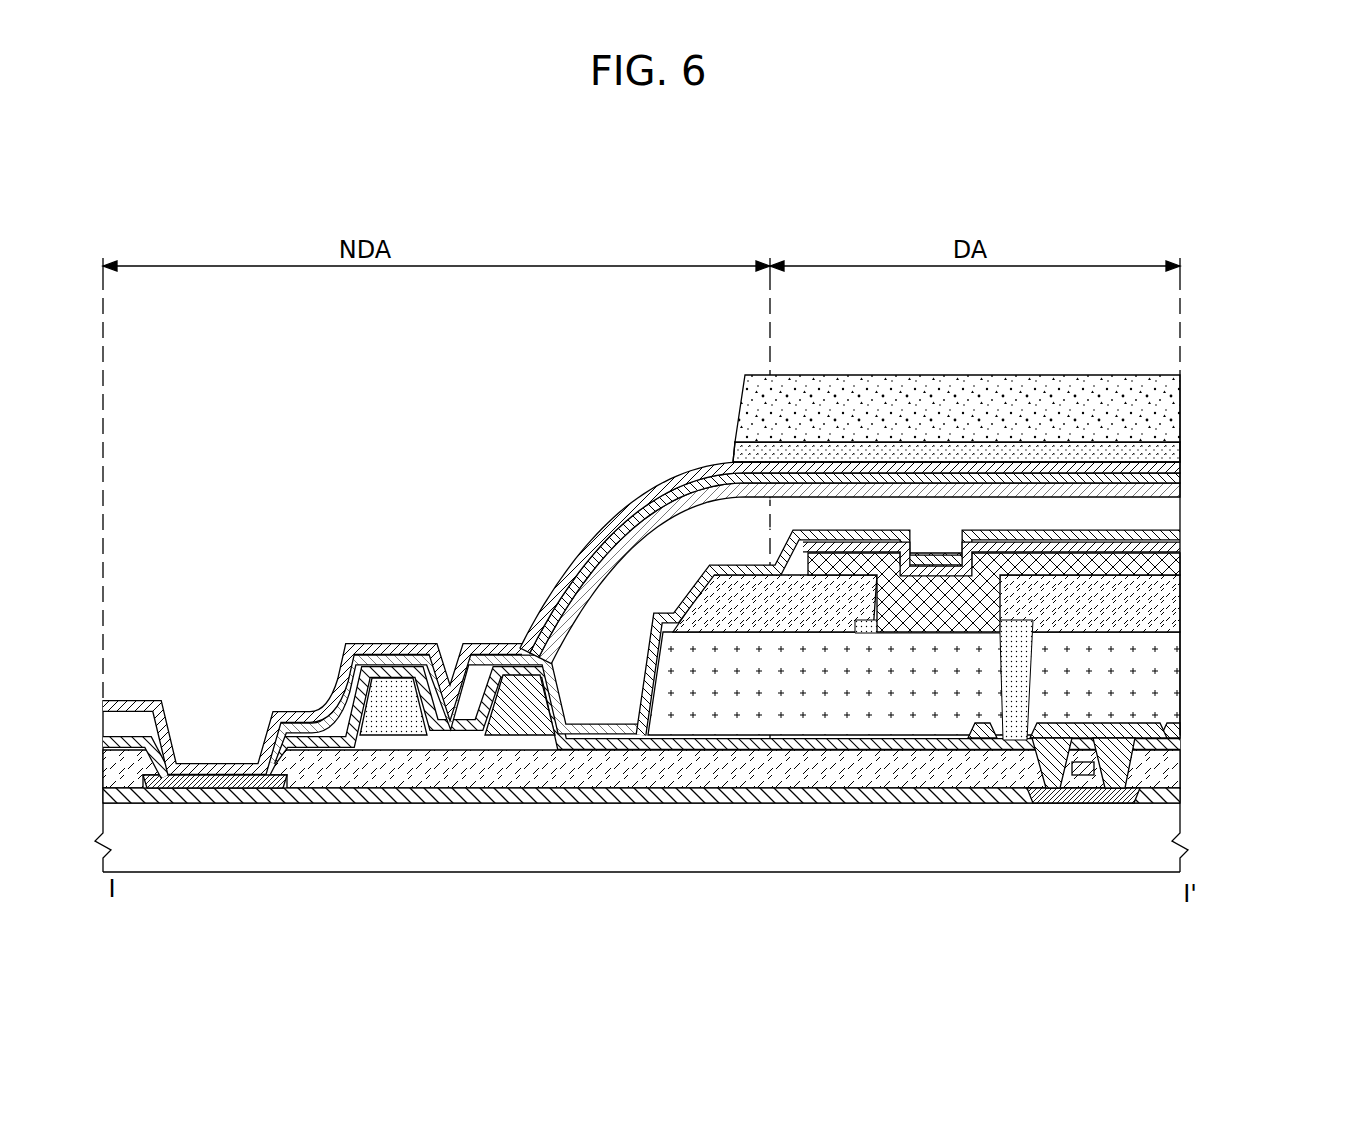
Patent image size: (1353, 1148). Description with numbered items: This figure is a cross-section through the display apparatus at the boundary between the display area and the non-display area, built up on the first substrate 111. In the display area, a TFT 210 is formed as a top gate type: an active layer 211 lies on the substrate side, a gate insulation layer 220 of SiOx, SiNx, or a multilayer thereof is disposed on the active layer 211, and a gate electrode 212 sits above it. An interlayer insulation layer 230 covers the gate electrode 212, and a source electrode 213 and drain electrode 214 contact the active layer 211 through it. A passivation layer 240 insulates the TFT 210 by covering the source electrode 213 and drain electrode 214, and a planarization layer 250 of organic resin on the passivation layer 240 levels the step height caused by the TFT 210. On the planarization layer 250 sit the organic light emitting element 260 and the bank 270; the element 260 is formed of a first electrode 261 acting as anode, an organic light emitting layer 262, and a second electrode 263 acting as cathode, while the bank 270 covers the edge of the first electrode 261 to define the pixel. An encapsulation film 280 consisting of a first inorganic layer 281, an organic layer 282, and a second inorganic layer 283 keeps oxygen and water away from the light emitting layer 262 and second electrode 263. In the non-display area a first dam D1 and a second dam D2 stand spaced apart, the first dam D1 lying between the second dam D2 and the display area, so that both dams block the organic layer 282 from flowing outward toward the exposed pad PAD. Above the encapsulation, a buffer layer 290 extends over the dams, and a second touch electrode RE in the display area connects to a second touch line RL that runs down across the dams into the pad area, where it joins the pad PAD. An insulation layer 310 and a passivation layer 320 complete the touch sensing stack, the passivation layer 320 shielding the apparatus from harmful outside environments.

The first substrate 111 is at (1170, 820).
The gate insulation layer 220 is at (1182, 797).
The interlayer insulation layer 230 is at (1170, 770).
The passivation layer 240 is at (1182, 742).
The planarization layer 250 is at (1170, 712).
The TFT 210 is at (1072, 838).
The active layer 211 is at (1057, 805).
The gate electrode 212 is at (1085, 777).
The source electrode 213 is at (1012, 787).
The drain electrode 214 is at (1124, 825).
The organic light emitting element 260 is at (982, 633).
The first electrode 261 is at (1182, 565).
The organic light emitting layer 262 is at (1182, 548).
The second electrode 263 is at (1182, 535).
The bank 270 is at (1048, 598).
The encapsulation film 280 is at (927, 564).
The first inorganic layer 281 is at (1168, 513).
The organic layer 282 is at (1182, 491).
The second inorganic layer 283 is at (1182, 479).
The buffer layer 290 is at (1182, 468).
The insulation layer 310 is at (1182, 448).
The passivation layer 320 is at (850, 412).
The second touch electrode RE is at (905, 455).
The second touch line RL is at (303, 712).
The pad PAD is at (230, 790).
The first dam D1 is at (522, 712).
The second dam D2 is at (392, 722).